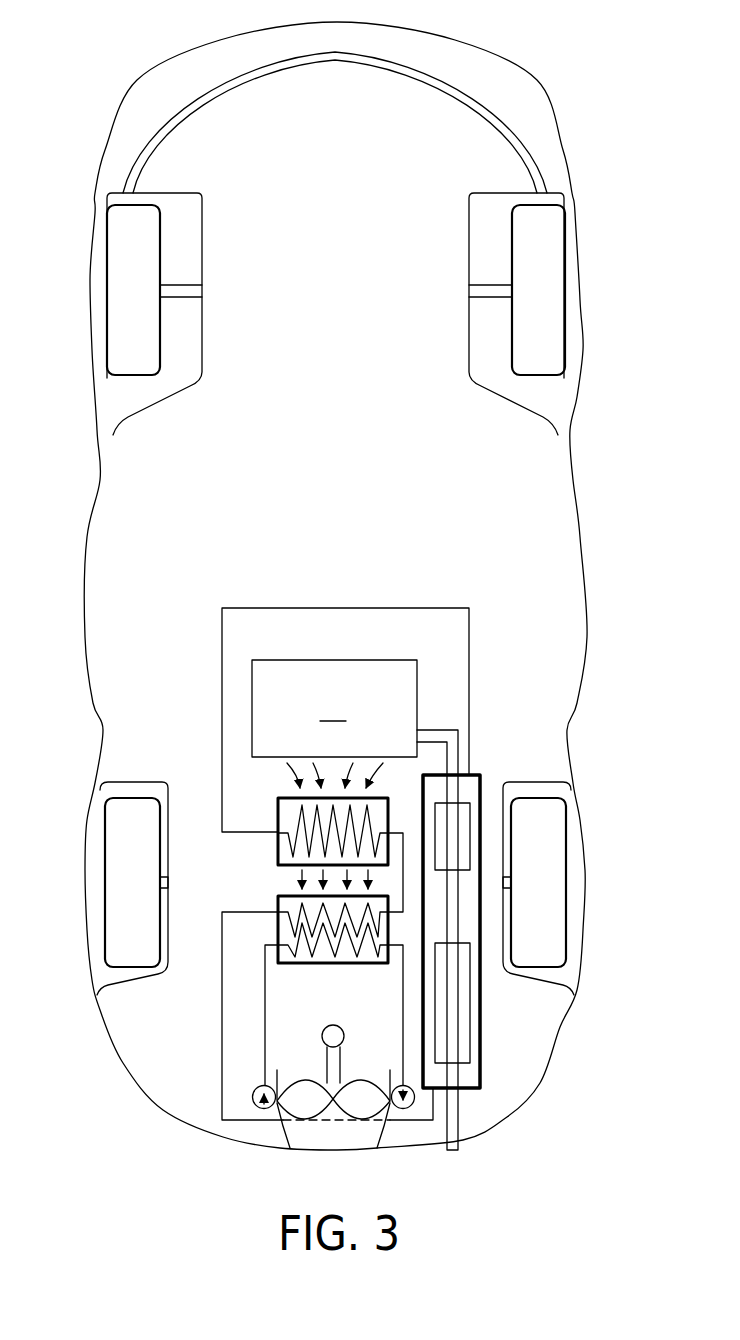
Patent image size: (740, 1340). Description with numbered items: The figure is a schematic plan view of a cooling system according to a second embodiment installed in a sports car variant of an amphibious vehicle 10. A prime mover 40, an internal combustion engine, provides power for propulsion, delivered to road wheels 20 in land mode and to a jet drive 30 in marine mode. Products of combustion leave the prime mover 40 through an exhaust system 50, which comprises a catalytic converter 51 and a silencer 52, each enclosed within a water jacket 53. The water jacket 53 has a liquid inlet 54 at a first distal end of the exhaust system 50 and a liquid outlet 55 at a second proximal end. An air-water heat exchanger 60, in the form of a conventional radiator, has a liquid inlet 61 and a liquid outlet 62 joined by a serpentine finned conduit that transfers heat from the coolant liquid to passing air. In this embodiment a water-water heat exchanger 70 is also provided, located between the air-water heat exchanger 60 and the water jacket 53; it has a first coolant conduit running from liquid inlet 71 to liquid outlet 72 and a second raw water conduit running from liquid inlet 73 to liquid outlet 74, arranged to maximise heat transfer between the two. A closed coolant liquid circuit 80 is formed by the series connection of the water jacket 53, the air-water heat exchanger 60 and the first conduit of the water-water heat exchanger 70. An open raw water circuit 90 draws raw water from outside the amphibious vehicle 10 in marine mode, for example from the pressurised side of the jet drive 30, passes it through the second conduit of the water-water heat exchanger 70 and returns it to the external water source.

The amphibious vehicle 10 is at (591, 54).
The road wheels 20 is at (552, 242).
The jet drive 30 is at (322, 1143).
The prime mover 40 is at (334, 708).
The exhaust system 50 is at (465, 957).
The catalytic converter 51 is at (463, 837).
The silencer 52 is at (463, 1003).
The water jacket 53 is at (485, 1090).
The liquid inlet 54 is at (433, 1090).
The liquid outlet 55 is at (478, 775).
The air-water heat exchanger 60 is at (309, 820).
The liquid inlet 61 is at (278, 835).
The liquid outlet 62 is at (390, 833).
The water-water heat exchanger 70 is at (332, 957).
The liquid inlet 71 is at (390, 917).
The liquid outlet 72 is at (278, 908).
The liquid inlet 73 is at (278, 946).
The liquid outlet 74 is at (392, 963).
The closed coolant liquid circuit 80 is at (470, 607).
The open raw water circuit 90 is at (265, 1040).